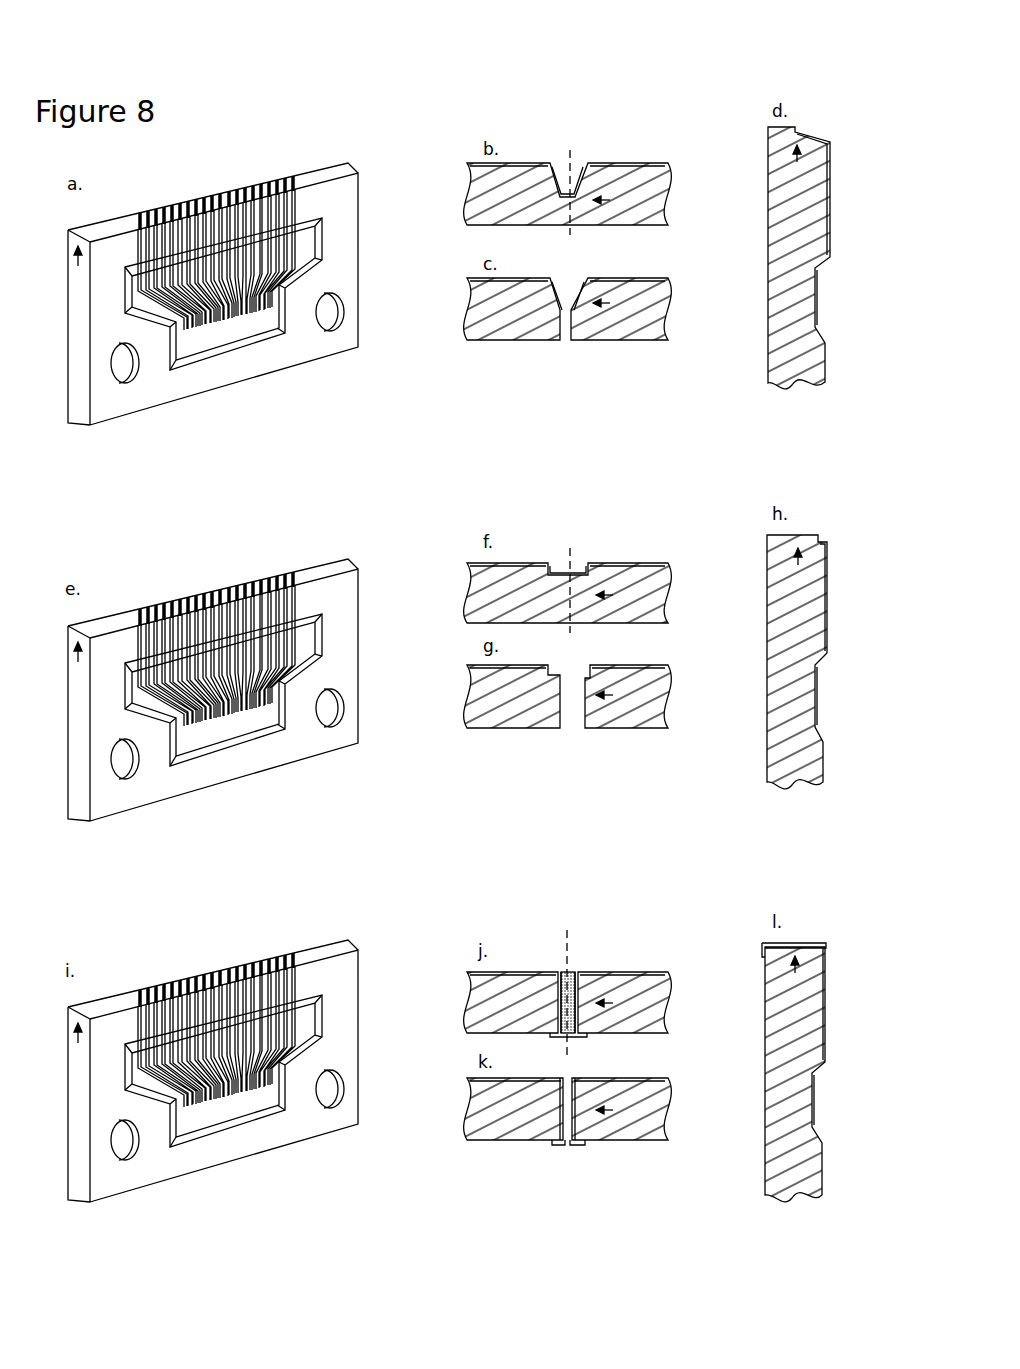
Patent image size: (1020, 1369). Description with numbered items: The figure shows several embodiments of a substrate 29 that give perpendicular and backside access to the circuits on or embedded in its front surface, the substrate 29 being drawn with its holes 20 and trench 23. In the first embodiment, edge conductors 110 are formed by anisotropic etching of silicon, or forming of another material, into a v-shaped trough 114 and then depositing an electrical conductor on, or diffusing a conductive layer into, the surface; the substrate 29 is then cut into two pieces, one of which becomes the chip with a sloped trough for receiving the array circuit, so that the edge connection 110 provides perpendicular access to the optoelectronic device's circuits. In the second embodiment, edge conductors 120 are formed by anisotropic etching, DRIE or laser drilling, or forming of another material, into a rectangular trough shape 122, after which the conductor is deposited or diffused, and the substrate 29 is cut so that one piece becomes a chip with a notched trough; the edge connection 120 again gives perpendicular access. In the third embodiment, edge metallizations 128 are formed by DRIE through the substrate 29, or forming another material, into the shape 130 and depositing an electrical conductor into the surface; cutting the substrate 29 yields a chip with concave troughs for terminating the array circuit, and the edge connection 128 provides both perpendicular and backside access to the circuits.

The holes 20 is at (267, 726).
The trench 23 is at (504, 703).
The substrate 29 is at (449, 681).
The edge conductors 110 is at (500, 209).
The v-shaped trough 114 is at (579, 180).
The edge conductors 120 is at (506, 608).
The rectangular trough shape 122 is at (579, 568).
The edge metallizations 128 is at (497, 1040).
The shape 130 is at (573, 975).